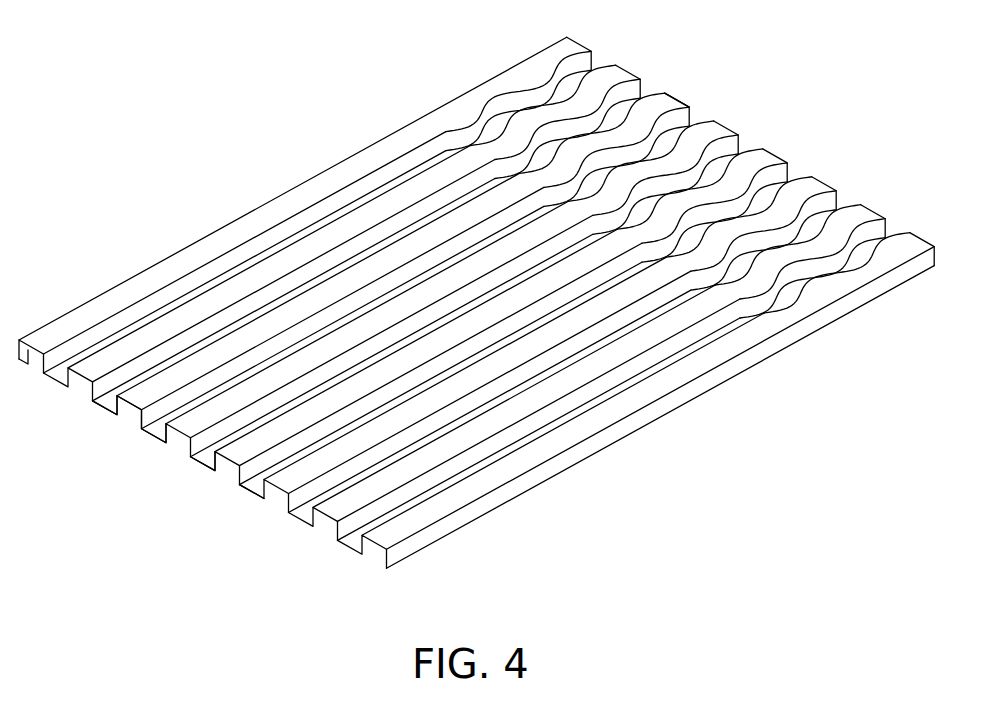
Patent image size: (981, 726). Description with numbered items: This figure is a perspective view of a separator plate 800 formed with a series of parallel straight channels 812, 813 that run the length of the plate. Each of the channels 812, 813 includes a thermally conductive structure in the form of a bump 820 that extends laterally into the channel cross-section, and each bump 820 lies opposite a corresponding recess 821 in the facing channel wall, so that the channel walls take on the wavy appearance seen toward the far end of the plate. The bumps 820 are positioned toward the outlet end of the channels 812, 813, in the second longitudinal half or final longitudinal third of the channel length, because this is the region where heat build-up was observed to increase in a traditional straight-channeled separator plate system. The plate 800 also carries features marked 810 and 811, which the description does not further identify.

The separator plate 800 is at (476, 301).
The channel 810 is at (112, 414).
The top wall (crest) 811 is at (676, 97).
The channel 812 is at (172, 446).
The channel 813 is at (250, 486).
The bump 820 is at (722, 246).
The recess 821 is at (797, 290).